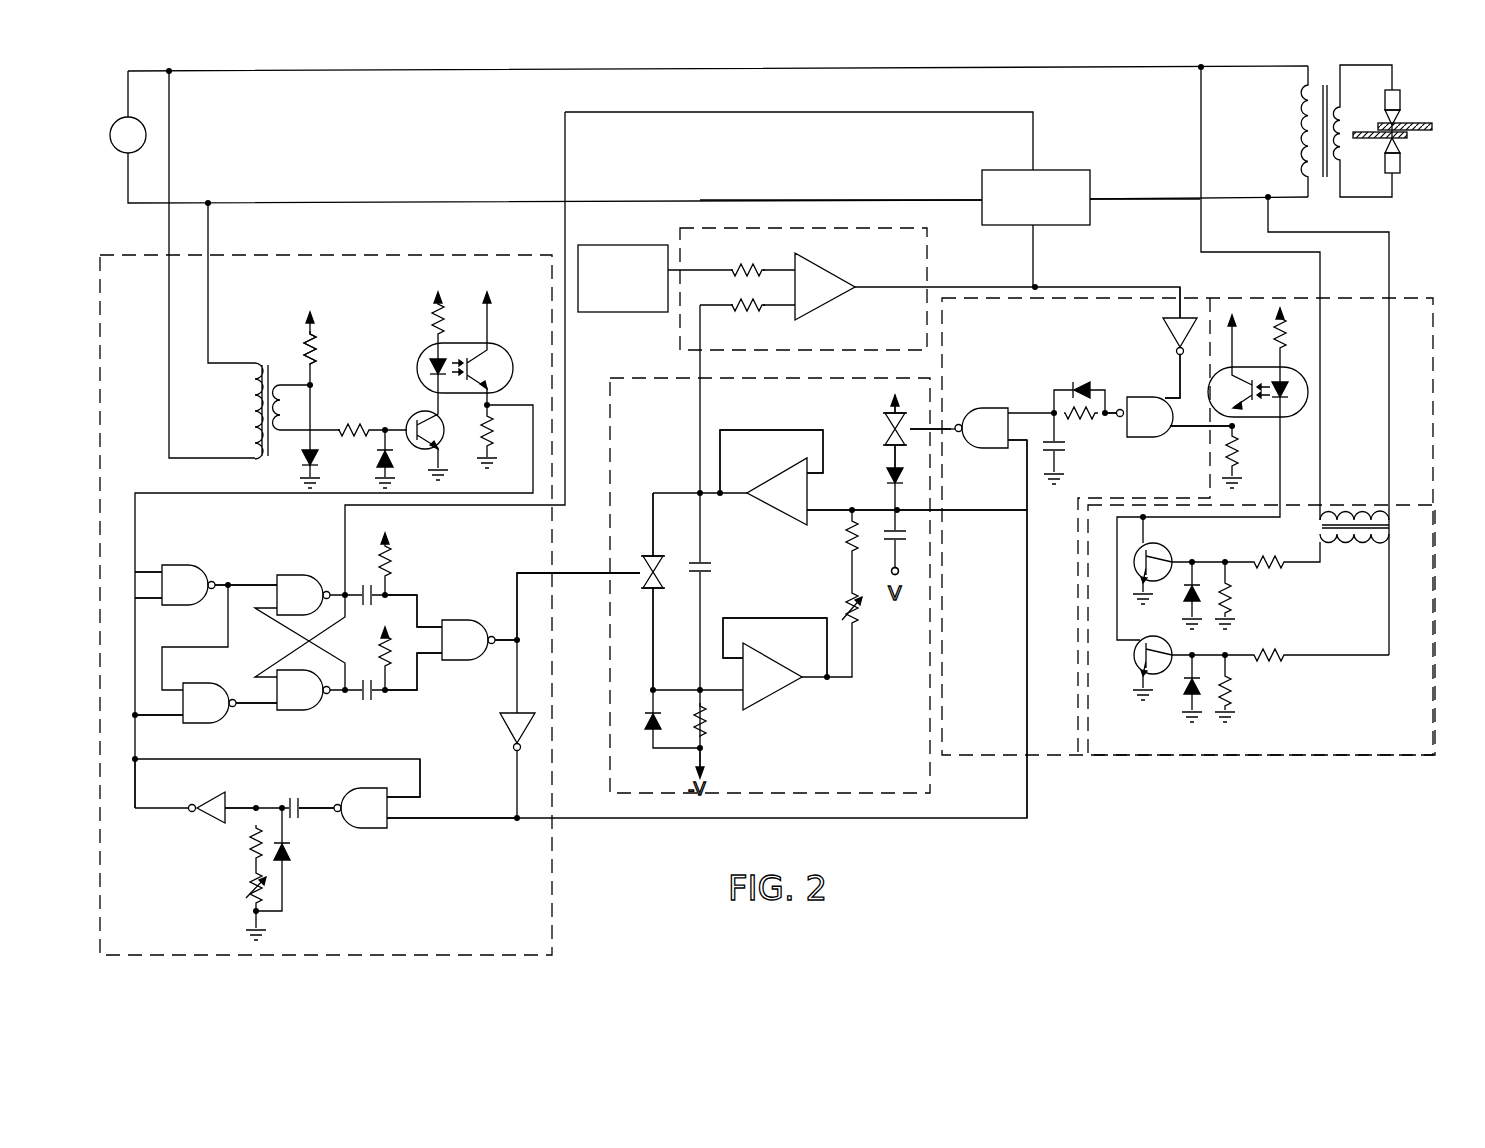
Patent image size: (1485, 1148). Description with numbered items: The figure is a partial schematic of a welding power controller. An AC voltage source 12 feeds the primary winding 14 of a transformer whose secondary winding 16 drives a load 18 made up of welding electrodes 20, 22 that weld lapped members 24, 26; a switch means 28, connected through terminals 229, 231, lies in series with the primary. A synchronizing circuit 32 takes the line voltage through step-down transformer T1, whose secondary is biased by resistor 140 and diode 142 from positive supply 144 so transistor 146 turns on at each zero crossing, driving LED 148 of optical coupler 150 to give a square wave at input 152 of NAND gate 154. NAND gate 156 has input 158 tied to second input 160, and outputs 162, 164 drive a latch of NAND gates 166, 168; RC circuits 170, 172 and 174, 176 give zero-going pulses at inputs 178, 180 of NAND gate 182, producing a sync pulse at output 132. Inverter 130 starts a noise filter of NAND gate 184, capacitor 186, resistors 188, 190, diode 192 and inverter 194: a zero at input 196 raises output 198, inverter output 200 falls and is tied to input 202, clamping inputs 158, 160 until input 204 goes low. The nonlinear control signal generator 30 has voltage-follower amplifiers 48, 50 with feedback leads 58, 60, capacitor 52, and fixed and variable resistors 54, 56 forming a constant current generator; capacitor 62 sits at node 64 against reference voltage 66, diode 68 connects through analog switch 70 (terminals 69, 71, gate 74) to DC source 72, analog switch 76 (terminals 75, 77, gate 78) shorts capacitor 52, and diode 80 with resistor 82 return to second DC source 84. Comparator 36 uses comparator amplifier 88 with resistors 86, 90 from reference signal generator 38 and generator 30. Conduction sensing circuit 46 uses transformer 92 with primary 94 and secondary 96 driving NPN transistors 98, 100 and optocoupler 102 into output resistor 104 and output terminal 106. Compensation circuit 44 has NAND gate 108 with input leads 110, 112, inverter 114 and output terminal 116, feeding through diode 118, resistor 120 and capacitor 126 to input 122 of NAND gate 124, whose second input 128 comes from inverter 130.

The AC voltage source 12 is at (120, 118).
The primary winding 14 is at (1305, 120).
The secondary winding 16 is at (1343, 117).
The load 18 is at (1413, 140).
The welding electrode 20 is at (1398, 95).
The welding electrode 22 is at (1402, 168).
The lapped member 24 is at (1412, 122).
The lapped member 26 is at (1380, 140).
The switch means 28 is at (1005, 170).
The terminal 229 is at (815, 198).
The terminal 231 is at (1121, 197).
The nonlinear control signal generator 30 is at (932, 768).
The synchronizing circuit 32 is at (553, 878).
The comparator 36 is at (930, 262).
The reference signal generator 38 is at (637, 312).
The compensation circuit 44 is at (1040, 757).
The conduction sensing circuit 46 is at (1268, 757).
The first voltage follower connected amplifier 48 is at (775, 478).
The second voltage follower connected amplifier 50 is at (775, 698).
The capacitor 52 is at (712, 566).
The fixed resistor 54 is at (845, 538).
The variable resistor 56 is at (860, 618).
The lead 58 is at (773, 430).
The lead 60 is at (770, 618).
The capacitor 62 is at (915, 535).
The node 64 is at (935, 508).
The source of reference voltage 66 is at (905, 572).
The diode 68 is at (885, 478).
The conducting terminal 69 is at (935, 405).
The analog switch 70 is at (880, 420).
The conducting terminal 71 is at (890, 460).
The fixed DC source of voltage 72 is at (888, 385).
The triggering gate 74 is at (945, 432).
The conducting terminal 75 is at (652, 530).
The second analog switch 76 is at (662, 558).
The conducting terminal 77 is at (652, 630).
The triggering gate 78 is at (625, 578).
The diode 80 is at (648, 735).
The resistor 82 is at (707, 725).
The second source of DC voltage 84 is at (735, 790).
The resistor 86 is at (738, 265).
The comparator amplifier 88 is at (830, 270).
The second resistor 90 is at (745, 310).
The transformer 92 is at (1320, 527).
The primary 94 is at (1362, 512).
The secondary 96 is at (1360, 542).
The NPN transistor 98 is at (1170, 548).
The NPN transistor 100 is at (1138, 672).
The light emitting diode-photosensitive transistor pair 102 is at (1305, 370).
The output resistor 104 is at (1238, 458).
The output terminal 106 is at (1210, 450).
The first NAND gate 108 is at (1137, 395).
The first input lead 110 is at (1178, 368).
The second input lead 112 is at (1190, 432).
The invertor 114 is at (1182, 318).
The output terminal 116 is at (1108, 408).
The diode 118 is at (1082, 388).
The resistor 120 is at (1080, 420).
The input 122 is at (1030, 408).
The second NAND gate 124 is at (975, 450).
The capacitor 126 is at (1068, 450).
The second input terminal 128 is at (1027, 590).
The invertor 130 is at (503, 728).
The output 132 is at (500, 638).
The resistor 140 is at (316, 352).
The diode 142 is at (303, 462).
The positive supply voltage 144 is at (300, 312).
The transistor 146 is at (414, 420).
The LED 148 is at (428, 370).
The optical coupler 150 is at (498, 348).
The input 152 is at (155, 568).
The NAND gate 154 is at (200, 568).
The second NAND gate 156 is at (215, 688).
The input 158 is at (150, 718).
The second input 160 is at (145, 600).
The output 162 is at (235, 582).
The output 164 is at (262, 705).
The NAND gate 166 is at (295, 572).
The NAND gate 168 is at (295, 712).
The resistor 170 is at (393, 560).
The capacitor 172 is at (362, 588).
The resistor 174 is at (380, 660).
The capacitor 176 is at (368, 700).
The input 178 is at (418, 625).
The input 180 is at (415, 656).
The NAND gate 182 is at (462, 622).
The NAND gate 184 is at (372, 833).
The capacitor 186 is at (290, 800).
The resistor 188 is at (252, 835).
The resistor 190 is at (260, 880).
The diode 192 is at (286, 865).
The inverter 194 is at (200, 820).
The input 196 is at (460, 822).
The output 198 is at (330, 805).
The inverter output 200 is at (165, 805).
The input 202 is at (410, 797).
The input 204 is at (238, 805).
The step-down transformer T1 is at (273, 411).